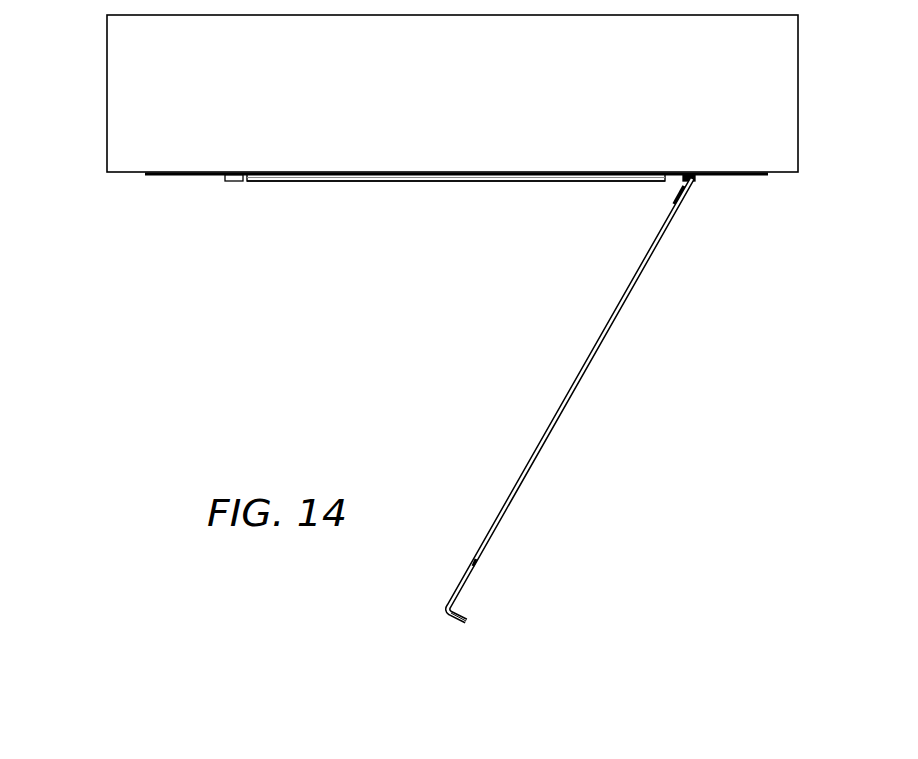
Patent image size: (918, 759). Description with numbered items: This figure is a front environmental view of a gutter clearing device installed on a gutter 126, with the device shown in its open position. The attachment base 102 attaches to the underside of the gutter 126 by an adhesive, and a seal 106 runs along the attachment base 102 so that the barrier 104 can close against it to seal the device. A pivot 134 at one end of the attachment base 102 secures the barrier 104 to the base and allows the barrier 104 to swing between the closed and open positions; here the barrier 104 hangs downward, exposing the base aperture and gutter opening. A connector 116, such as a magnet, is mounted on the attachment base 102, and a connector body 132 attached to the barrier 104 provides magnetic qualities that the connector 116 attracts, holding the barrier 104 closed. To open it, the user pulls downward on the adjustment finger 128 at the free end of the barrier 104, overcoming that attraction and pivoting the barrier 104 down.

The gutter 126 is at (128, 125).
The attachment base 102 is at (271, 172).
The seal 106 is at (328, 183).
The connector 116 is at (233, 182).
The pivot 134 is at (679, 173).
The barrier 104 is at (578, 395).
The connector body 132 is at (470, 564).
The adjustment finger 128 is at (462, 616).